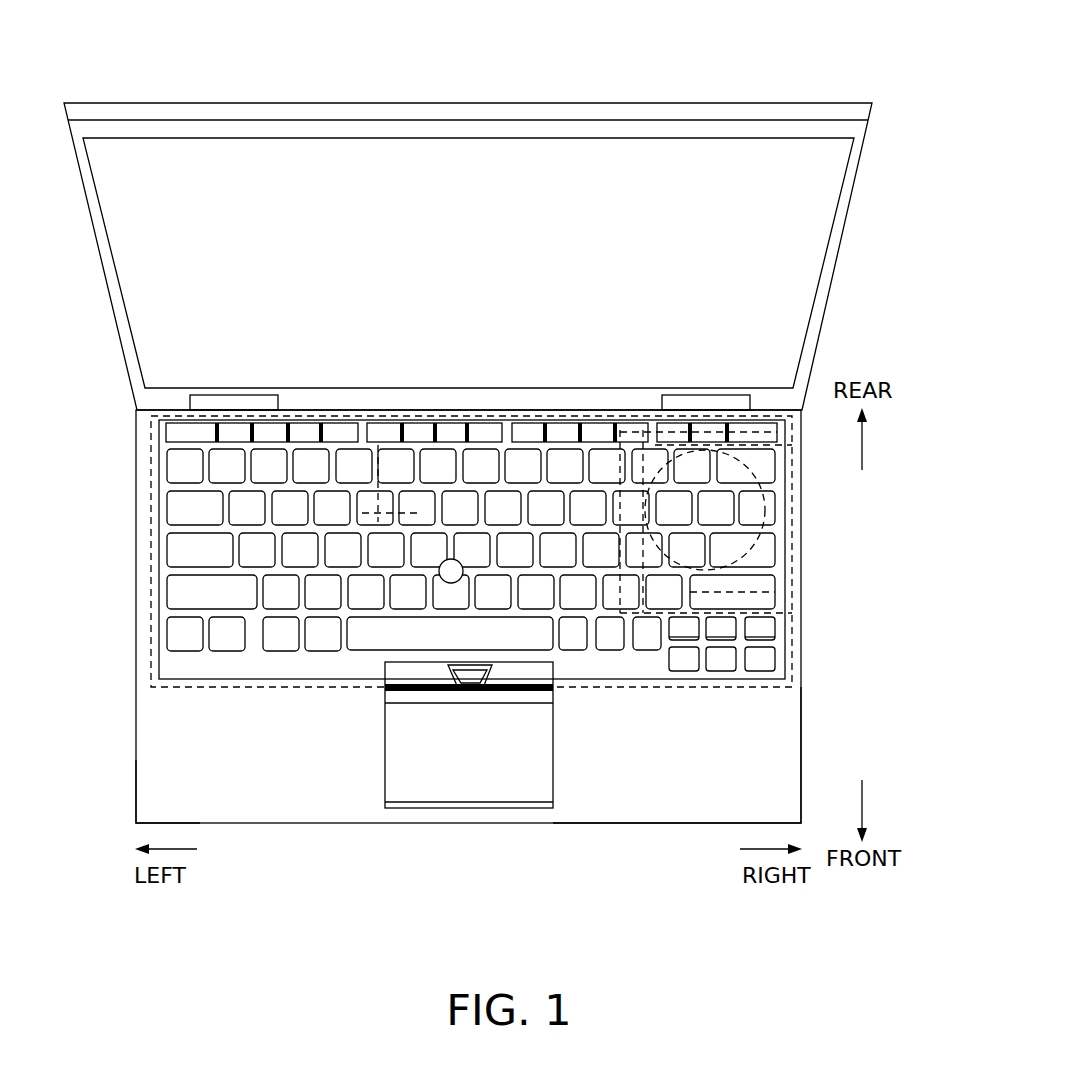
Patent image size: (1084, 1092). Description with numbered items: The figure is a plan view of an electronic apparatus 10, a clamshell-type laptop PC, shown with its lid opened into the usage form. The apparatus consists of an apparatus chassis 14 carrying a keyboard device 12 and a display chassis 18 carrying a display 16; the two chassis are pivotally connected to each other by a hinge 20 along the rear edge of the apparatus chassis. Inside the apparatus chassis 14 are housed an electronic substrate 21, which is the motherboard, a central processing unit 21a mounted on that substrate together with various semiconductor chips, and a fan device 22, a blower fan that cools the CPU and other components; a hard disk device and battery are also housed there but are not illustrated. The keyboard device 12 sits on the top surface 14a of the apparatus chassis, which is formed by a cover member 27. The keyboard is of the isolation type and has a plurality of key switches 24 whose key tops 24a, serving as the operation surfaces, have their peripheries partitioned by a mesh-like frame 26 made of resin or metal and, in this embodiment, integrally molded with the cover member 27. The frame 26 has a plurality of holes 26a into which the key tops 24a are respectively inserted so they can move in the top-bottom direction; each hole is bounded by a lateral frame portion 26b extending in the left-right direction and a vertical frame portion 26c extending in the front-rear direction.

The electronic apparatus 10 is at (75, 45).
The keyboard device 12 is at (160, 525).
The apparatus chassis 14 is at (133, 736).
The top surface 14a is at (145, 798).
The display 16 is at (800, 253).
The display chassis 18 is at (862, 187).
The hinge 20 is at (215, 395).
The electronic substrate 21 is at (693, 690).
The central processing unit (CPU) 21a is at (373, 443).
The fan device 22 is at (797, 570).
The key switch 24 is at (483, 438).
The key top 24a is at (418, 520).
The frame 26 is at (285, 668).
The hole 26a is at (565, 455).
The lateral frame portion 26b is at (333, 487).
The vertical frame portion 26c is at (250, 465).
The cover member 27 is at (782, 725).